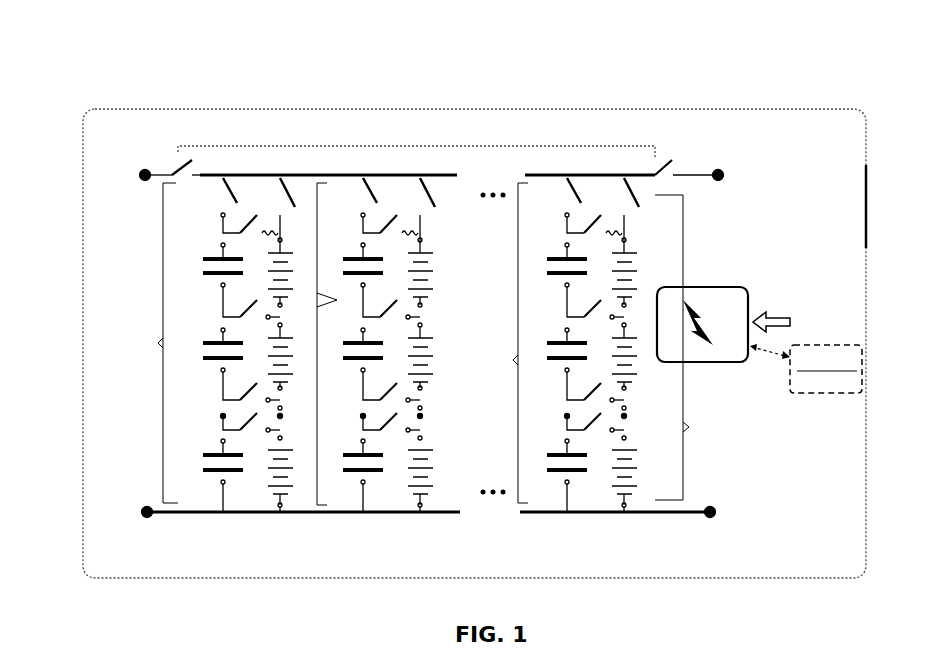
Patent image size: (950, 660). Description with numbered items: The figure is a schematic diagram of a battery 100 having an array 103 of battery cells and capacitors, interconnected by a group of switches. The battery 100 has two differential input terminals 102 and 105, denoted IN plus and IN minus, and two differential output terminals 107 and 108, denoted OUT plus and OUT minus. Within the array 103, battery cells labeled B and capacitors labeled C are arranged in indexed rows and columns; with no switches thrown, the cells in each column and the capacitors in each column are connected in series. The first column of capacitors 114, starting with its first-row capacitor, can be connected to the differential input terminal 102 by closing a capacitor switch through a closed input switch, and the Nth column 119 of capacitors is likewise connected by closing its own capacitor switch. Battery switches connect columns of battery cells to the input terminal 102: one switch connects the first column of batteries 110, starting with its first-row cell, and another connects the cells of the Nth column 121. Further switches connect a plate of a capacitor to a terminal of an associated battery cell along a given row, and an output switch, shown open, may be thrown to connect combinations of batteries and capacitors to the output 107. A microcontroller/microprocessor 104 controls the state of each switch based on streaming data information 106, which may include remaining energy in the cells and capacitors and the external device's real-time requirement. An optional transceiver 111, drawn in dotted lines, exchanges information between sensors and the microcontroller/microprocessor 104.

The battery 100 is at (805, 109).
The differential input terminal 102 is at (140, 179).
The array 103 is at (420, 146).
The microcontroller/microprocessor 104 is at (724, 309).
The differential input terminal 105 is at (143, 508).
The streaming data information 106 is at (791, 322).
The differential output terminal 107 is at (724, 180).
The differential output terminal 108 is at (716, 506).
The first column of batteries 110 is at (336, 300).
The transceiver 111 is at (850, 401).
The first column of capacitors 114 is at (158, 343).
The Nth column of capacitors 119 is at (513, 360).
The Nth column 121 is at (690, 427).